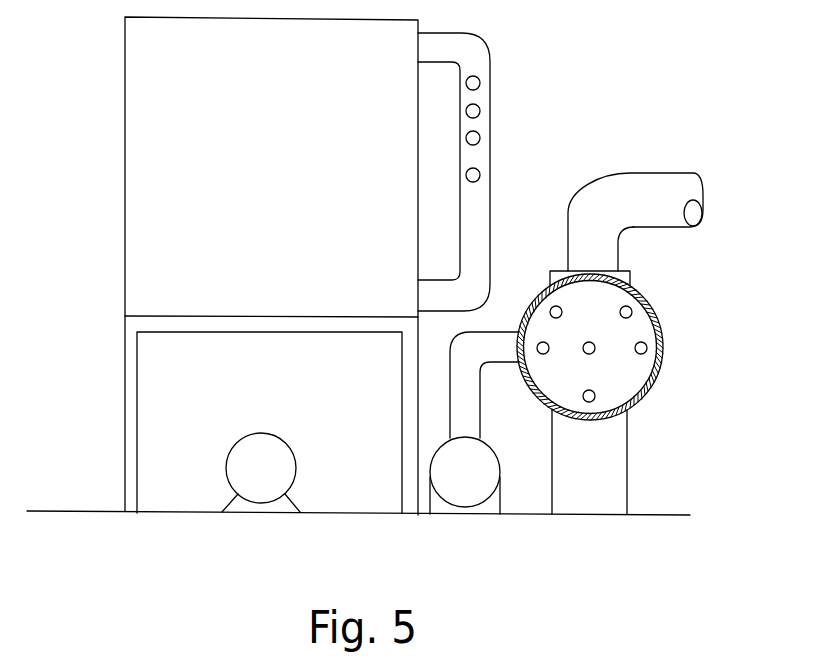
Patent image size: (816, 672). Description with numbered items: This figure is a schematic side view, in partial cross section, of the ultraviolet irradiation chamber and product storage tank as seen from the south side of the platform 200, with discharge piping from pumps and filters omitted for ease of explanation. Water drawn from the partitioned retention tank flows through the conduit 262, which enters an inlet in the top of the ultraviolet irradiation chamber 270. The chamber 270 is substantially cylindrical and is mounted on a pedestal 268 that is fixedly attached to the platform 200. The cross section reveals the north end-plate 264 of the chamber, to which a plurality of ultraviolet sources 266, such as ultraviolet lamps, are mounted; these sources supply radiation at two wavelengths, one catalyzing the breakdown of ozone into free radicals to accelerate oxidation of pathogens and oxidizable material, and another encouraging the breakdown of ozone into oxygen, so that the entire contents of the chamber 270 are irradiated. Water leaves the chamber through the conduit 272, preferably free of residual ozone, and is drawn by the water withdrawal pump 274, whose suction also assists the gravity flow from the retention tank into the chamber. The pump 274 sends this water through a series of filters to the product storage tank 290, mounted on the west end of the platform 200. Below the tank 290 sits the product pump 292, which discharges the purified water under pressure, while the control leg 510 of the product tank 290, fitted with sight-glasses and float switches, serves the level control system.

The platform 200 is at (682, 513).
The conduit 262 is at (595, 182).
The north end-plate 264 is at (617, 367).
The ultraviolet sources 266 is at (555, 306).
The pedestal 268 is at (628, 486).
The ultraviolet irradiation chamber 270 is at (664, 337).
The conduit 272 is at (502, 363).
The water withdrawal pump 274 is at (463, 477).
The product storage tank 290 is at (124, 232).
The product pump 292 is at (234, 446).
The control leg 510 is at (491, 53).